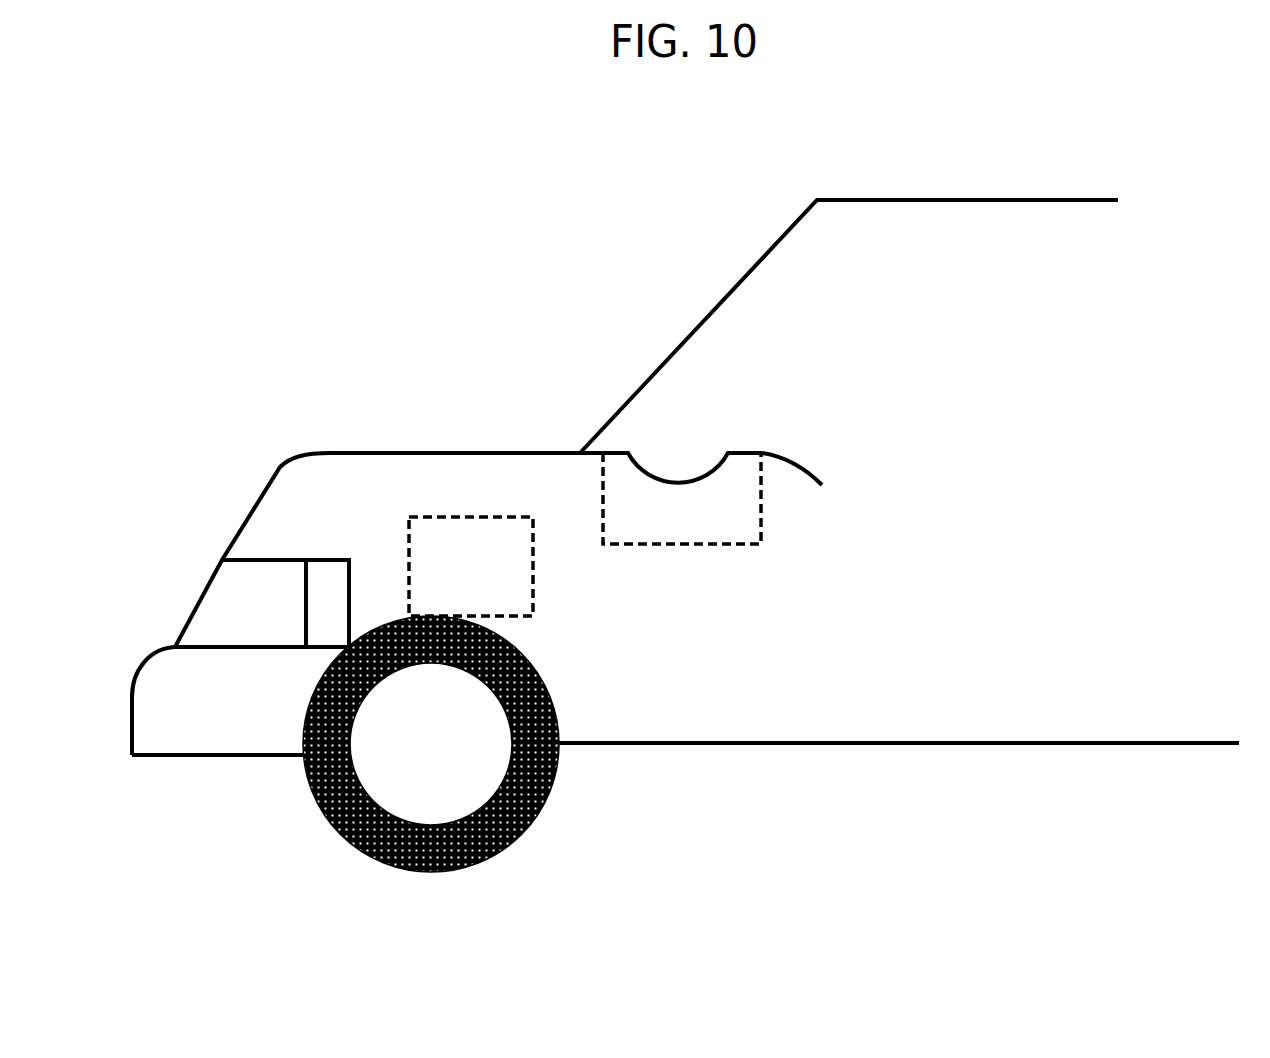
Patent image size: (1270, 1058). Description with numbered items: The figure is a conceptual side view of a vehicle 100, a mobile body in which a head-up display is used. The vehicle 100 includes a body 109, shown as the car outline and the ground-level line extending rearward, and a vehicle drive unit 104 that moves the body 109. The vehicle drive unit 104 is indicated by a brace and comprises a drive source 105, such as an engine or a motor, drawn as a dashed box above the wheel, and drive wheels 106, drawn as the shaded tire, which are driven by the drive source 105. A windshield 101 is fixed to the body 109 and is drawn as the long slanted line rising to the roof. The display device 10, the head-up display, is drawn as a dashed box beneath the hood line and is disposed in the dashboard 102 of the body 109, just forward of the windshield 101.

The display device 10 is at (725, 544).
The vehicle 100 is at (170, 765).
The windshield 101 is at (763, 255).
The dashboard 102 is at (783, 457).
The vehicle drive unit 104 is at (514, 720).
The drive source 105 is at (533, 616).
The drive wheels 106 is at (548, 795).
The body 109 is at (772, 743).